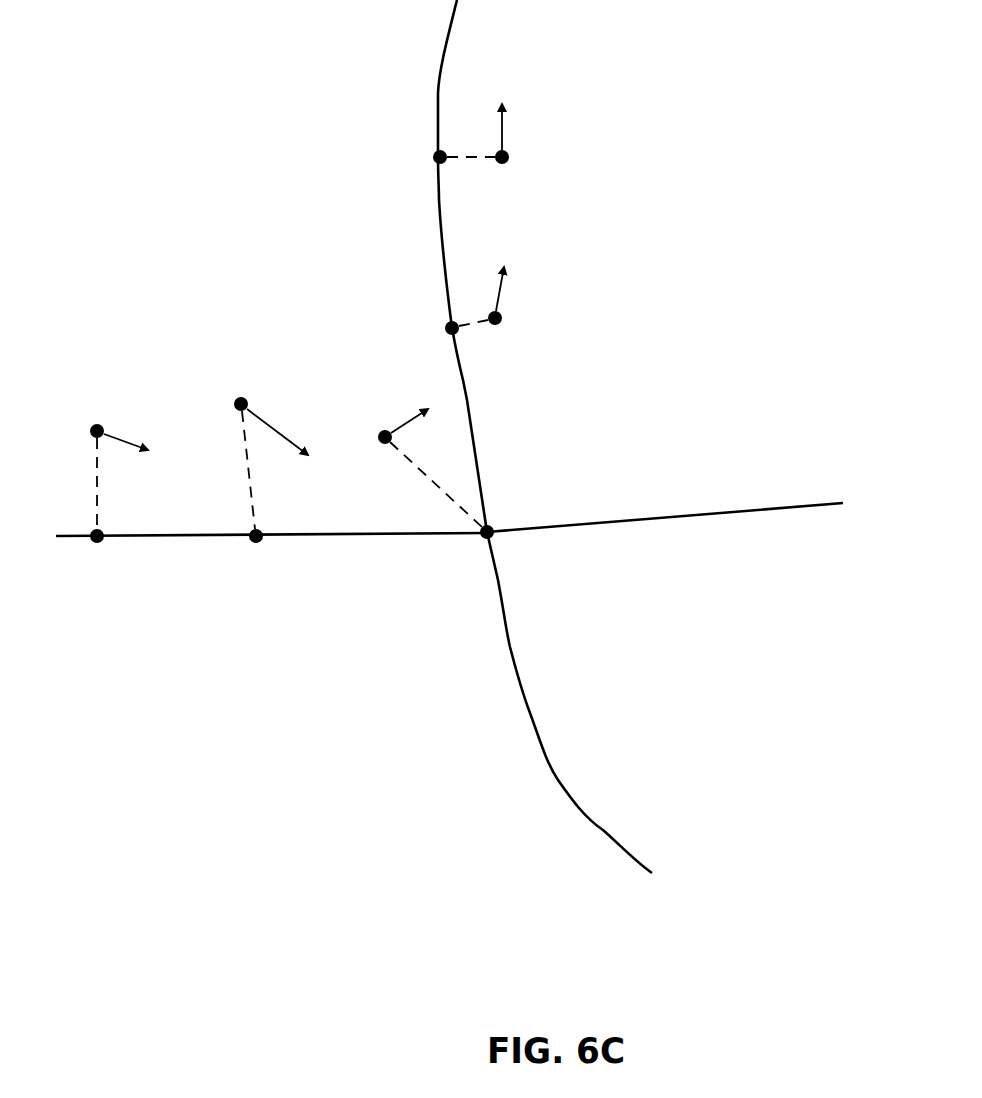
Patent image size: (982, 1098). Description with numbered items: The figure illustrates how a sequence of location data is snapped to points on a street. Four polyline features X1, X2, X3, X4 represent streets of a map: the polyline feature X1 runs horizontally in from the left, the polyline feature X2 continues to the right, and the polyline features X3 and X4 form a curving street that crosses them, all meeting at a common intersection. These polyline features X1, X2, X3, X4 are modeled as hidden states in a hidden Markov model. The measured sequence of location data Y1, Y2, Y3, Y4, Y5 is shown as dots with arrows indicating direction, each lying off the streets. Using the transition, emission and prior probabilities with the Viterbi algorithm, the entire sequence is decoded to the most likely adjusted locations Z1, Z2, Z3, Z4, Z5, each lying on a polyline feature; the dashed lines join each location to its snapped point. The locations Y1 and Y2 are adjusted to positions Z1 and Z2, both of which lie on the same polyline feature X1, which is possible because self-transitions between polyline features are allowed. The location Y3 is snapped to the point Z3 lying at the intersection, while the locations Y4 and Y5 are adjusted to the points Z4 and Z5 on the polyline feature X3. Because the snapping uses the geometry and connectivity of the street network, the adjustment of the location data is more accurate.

The polyline feature X1 is at (271, 578).
The polyline feature X2 is at (665, 540).
The polyline feature X3 is at (436, 266).
The polyline feature X4 is at (569, 710).
The adjusted location Z1 is at (97, 558).
The adjusted location Z2 is at (262, 558).
The adjusted location Z3 is at (503, 548).
The adjusted location Z4 is at (438, 335).
The adjusted location Z5 is at (427, 162).
The location data Y1 is at (104, 476).
The location data Y2 is at (256, 462).
The location data Y3 is at (421, 464).
The location data Y4 is at (497, 306).
The location data Y5 is at (496, 139).